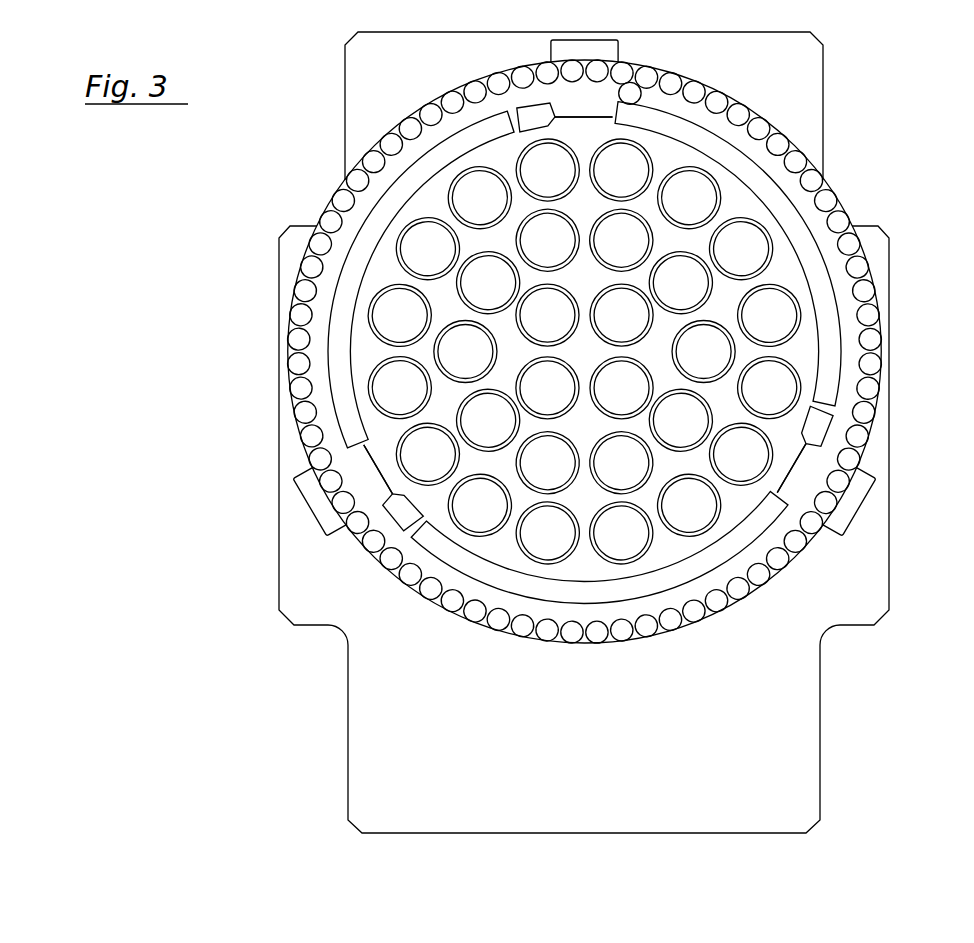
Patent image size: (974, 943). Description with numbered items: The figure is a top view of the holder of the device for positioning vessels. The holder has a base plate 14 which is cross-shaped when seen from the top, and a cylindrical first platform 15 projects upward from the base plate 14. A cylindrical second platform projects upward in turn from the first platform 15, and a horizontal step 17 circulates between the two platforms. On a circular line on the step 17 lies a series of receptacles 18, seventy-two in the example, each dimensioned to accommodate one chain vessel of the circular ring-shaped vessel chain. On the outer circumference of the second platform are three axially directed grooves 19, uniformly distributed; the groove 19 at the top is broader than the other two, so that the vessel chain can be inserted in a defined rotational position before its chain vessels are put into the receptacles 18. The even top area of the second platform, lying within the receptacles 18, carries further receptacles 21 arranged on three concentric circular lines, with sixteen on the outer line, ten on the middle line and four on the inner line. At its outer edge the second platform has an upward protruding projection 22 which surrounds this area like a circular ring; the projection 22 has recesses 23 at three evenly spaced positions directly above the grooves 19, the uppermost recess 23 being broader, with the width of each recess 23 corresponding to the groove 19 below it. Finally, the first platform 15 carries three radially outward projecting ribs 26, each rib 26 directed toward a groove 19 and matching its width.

The base plate 14 is at (603, 748).
The first platform 15 is at (794, 484).
The step 17 is at (322, 351).
The receptacles 18 is at (452, 620).
The grooves 19 is at (578, 108).
The further receptacles 21 is at (418, 246).
The projection 22 is at (790, 232).
The recesses 23 is at (596, 114).
The ribs 26 is at (600, 48).